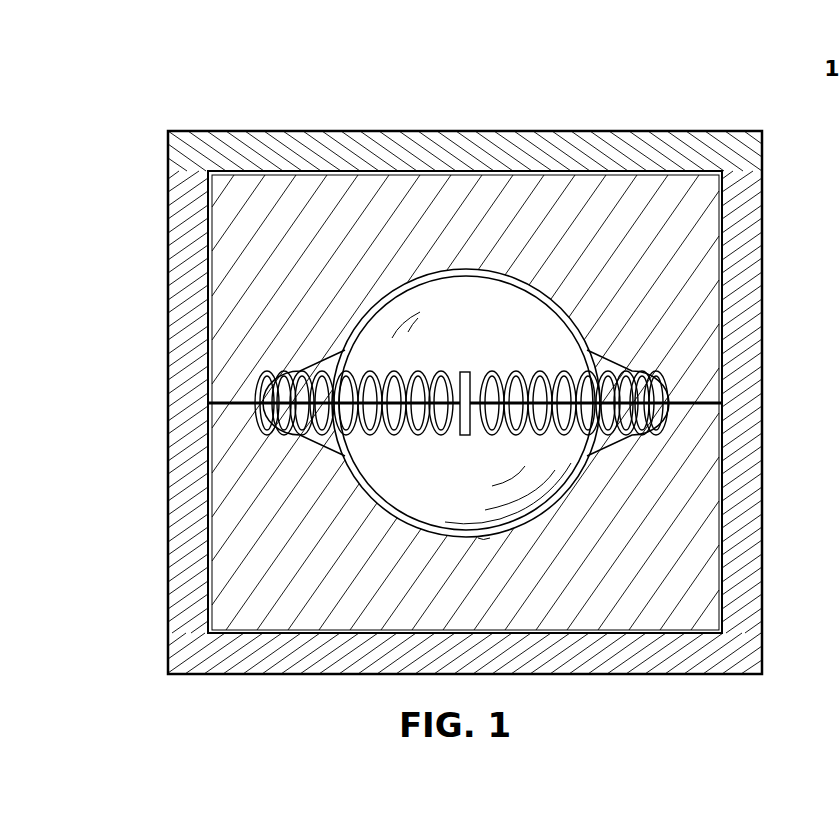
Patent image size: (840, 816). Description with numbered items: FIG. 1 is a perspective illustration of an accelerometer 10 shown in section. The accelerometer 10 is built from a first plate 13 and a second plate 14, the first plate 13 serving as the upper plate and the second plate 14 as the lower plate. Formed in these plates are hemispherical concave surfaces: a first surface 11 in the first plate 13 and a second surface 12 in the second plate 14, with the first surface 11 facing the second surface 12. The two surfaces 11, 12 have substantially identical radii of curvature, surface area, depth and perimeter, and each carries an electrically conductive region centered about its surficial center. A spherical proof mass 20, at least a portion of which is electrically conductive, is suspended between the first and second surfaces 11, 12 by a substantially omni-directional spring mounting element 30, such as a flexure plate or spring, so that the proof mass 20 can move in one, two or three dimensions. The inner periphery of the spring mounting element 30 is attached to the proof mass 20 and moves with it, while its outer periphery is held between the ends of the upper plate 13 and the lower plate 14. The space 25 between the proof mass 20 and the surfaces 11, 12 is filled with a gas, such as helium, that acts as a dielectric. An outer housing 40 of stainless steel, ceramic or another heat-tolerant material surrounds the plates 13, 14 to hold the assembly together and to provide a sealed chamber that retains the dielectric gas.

The accelerometer 10 is at (206, 114).
The first plate 13 is at (380, 150).
The second plate 14 is at (237, 612).
The first surface 11 is at (385, 293).
The second surface 12 is at (513, 520).
The proof mass 20 is at (537, 330).
The space 25 is at (483, 538).
The spring mounting element 30 is at (210, 420).
The outer housing 40 is at (167, 332).